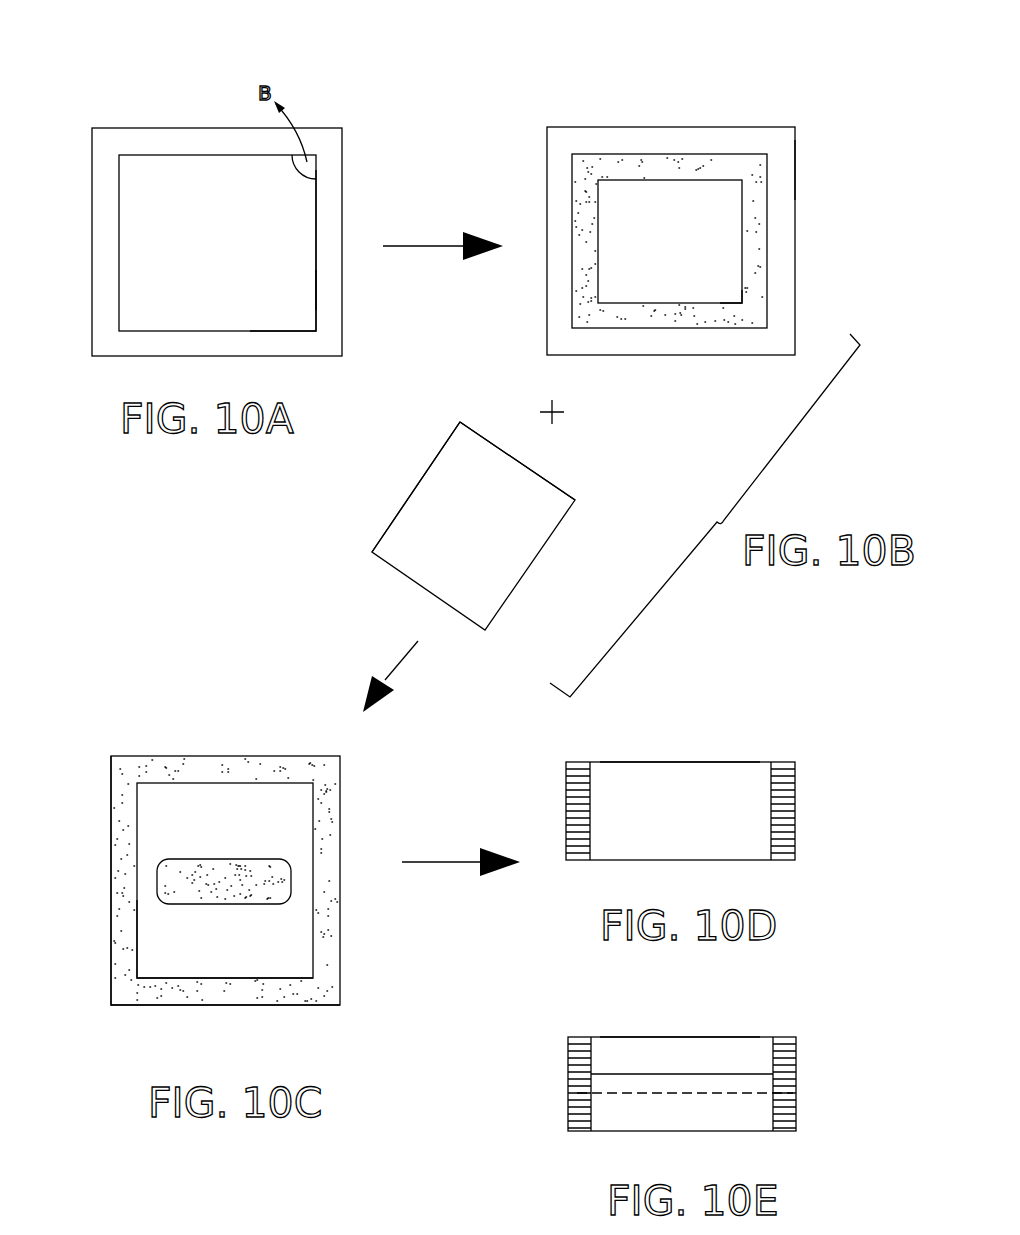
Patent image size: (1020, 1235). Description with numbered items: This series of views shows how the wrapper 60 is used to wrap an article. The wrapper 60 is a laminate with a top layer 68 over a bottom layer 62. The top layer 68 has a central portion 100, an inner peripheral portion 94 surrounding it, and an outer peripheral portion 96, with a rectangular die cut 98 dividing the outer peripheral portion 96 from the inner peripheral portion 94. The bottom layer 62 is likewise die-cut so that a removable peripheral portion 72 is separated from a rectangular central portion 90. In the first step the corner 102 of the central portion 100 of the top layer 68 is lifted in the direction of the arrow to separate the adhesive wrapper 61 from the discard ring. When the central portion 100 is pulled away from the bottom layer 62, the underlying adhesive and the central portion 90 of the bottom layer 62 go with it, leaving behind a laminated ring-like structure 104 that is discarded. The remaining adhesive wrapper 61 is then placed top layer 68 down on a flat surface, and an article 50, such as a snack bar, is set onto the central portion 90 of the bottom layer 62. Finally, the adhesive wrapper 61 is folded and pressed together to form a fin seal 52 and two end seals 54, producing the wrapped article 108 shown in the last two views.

In FIG. 10C, the article 50 is at (228, 862).
In FIG. 10E, the fin seal 52 is at (750, 1083).
In FIG. 10D, the end seals 54 is at (580, 810).
In FIG. 10E, the end seals 54 is at (585, 1053).
In FIG. 10A, the wrapper 60 is at (118, 95).
In FIG. 10B, the adhesive wrapper 61 is at (590, 510).
In FIG. 10C, the adhesive wrapper 61 is at (117, 735).
In FIG. 10B, the bottom layer 62 is at (755, 242).
In FIG. 10C, the bottom layer 62 is at (158, 960).
In FIG. 10A, the top layer 68 is at (325, 299).
In FIG. 10C, the top layer 68 is at (112, 950).
In FIG. 10D, the top layer 68 is at (665, 770).
In FIG. 10E, the top layer 68 is at (640, 1053).
In FIG. 10B, the peripheral portion 72 is at (753, 298).
In FIG. 10C, the central portion 90 is at (295, 800).
In FIG. 10C, the inner peripheral portion 94 is at (128, 903).
In FIG. 10B, the outer peripheral portion 96 is at (780, 150).
In FIG. 10A, the die cut 98 is at (316, 223).
In FIG. 10A, the central portion 100 is at (236, 253).
In FIG. 10B, the central portion 100 is at (492, 538).
In FIG. 10A, the corner 102 is at (310, 162).
In FIG. 10B, the ring-like structure 104 is at (766, 62).
In FIG. 10D, the wrapped article 108 is at (792, 738).
In FIG. 10E, the wrapped article 108 is at (786, 998).